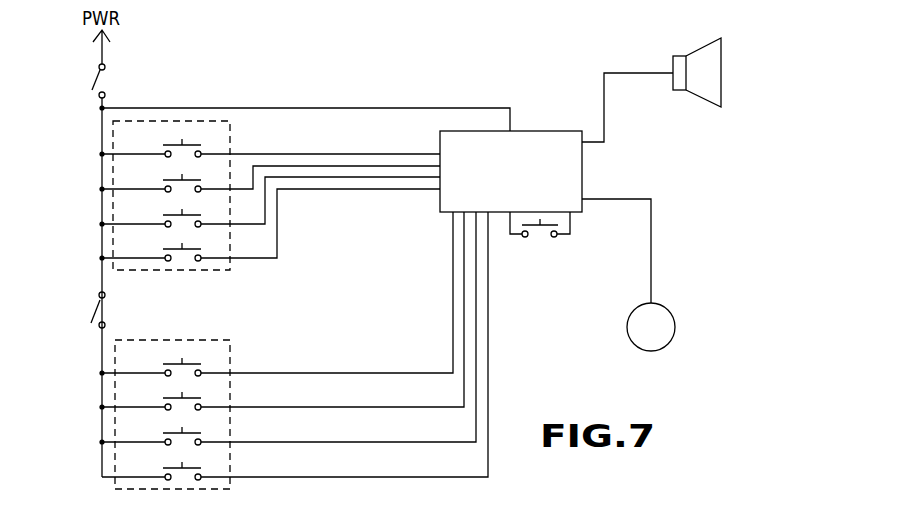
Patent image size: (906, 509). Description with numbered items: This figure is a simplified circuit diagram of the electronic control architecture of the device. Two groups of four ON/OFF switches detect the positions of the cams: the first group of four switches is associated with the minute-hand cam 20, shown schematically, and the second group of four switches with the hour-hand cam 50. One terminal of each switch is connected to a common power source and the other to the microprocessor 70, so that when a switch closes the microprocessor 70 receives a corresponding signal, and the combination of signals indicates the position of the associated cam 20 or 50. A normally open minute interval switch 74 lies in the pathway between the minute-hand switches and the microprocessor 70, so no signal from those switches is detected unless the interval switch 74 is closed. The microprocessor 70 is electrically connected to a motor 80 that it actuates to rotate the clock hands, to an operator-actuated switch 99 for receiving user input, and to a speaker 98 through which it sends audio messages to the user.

The minute-hand cam 20 is at (231, 341).
The hour-hand cam 50 is at (230, 145).
The microprocessor 70 is at (526, 185).
The minute interval switch 74 is at (100, 295).
The motor 80 is at (670, 313).
The speaker 98 is at (722, 77).
The operator-actuated switch 99 is at (556, 238).